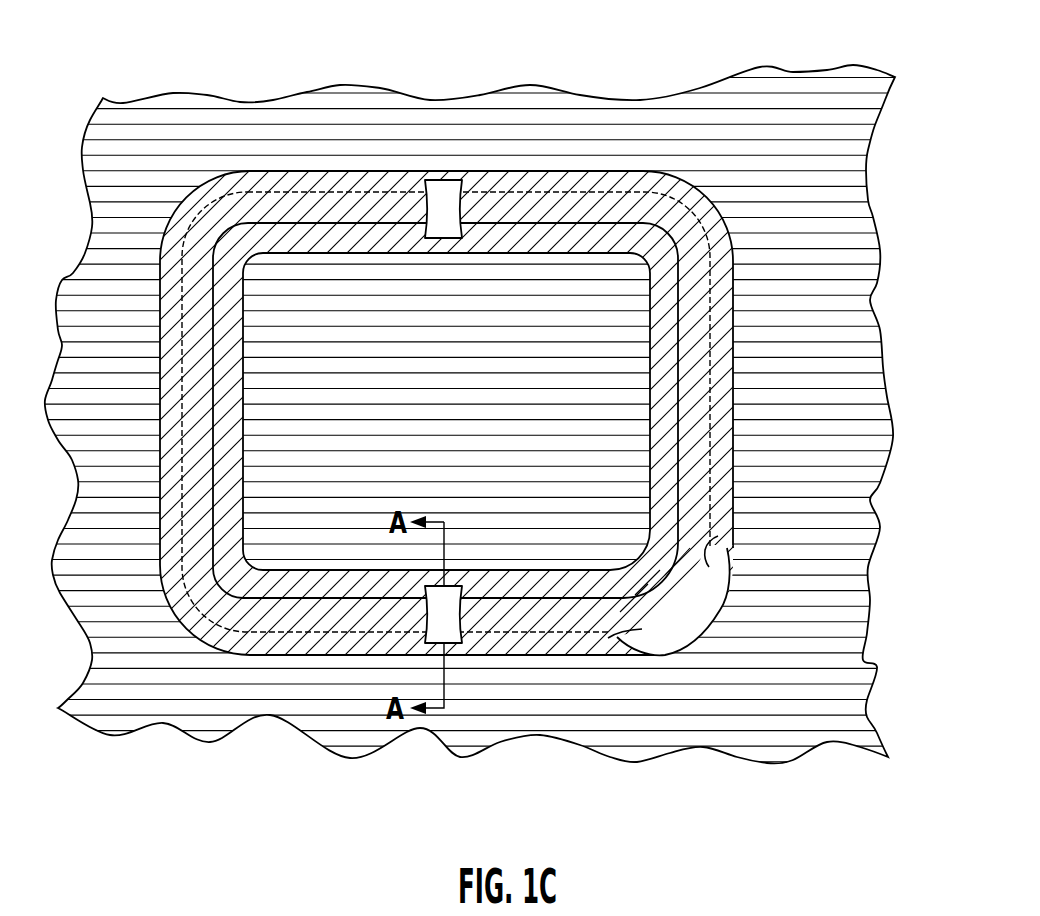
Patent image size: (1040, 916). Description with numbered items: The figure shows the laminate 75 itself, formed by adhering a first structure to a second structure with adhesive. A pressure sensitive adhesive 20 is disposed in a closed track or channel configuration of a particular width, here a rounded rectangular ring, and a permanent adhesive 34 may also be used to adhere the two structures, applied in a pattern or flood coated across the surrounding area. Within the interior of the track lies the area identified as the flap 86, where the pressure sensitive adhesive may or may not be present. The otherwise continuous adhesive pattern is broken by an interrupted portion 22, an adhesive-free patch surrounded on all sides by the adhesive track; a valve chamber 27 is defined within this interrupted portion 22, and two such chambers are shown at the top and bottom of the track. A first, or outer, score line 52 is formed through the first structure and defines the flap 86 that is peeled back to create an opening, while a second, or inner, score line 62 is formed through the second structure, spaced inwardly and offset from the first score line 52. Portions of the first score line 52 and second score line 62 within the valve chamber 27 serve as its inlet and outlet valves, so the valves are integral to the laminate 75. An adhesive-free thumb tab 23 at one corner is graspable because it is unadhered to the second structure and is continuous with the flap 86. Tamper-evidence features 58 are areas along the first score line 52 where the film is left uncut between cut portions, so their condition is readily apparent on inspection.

The laminate 75 is at (912, 106).
The pressure sensitive adhesive 20 is at (693, 280).
The flap 86 is at (389, 373).
The thumb tab 23 is at (699, 631).
The first score line 52 is at (712, 502).
The second score line 62 is at (673, 410).
The permanent adhesive 34 is at (813, 368).
The valve chamber 27 is at (456, 224).
The interrupted portion 22 is at (437, 179).
The tamper-evidence feature 58 is at (614, 640).